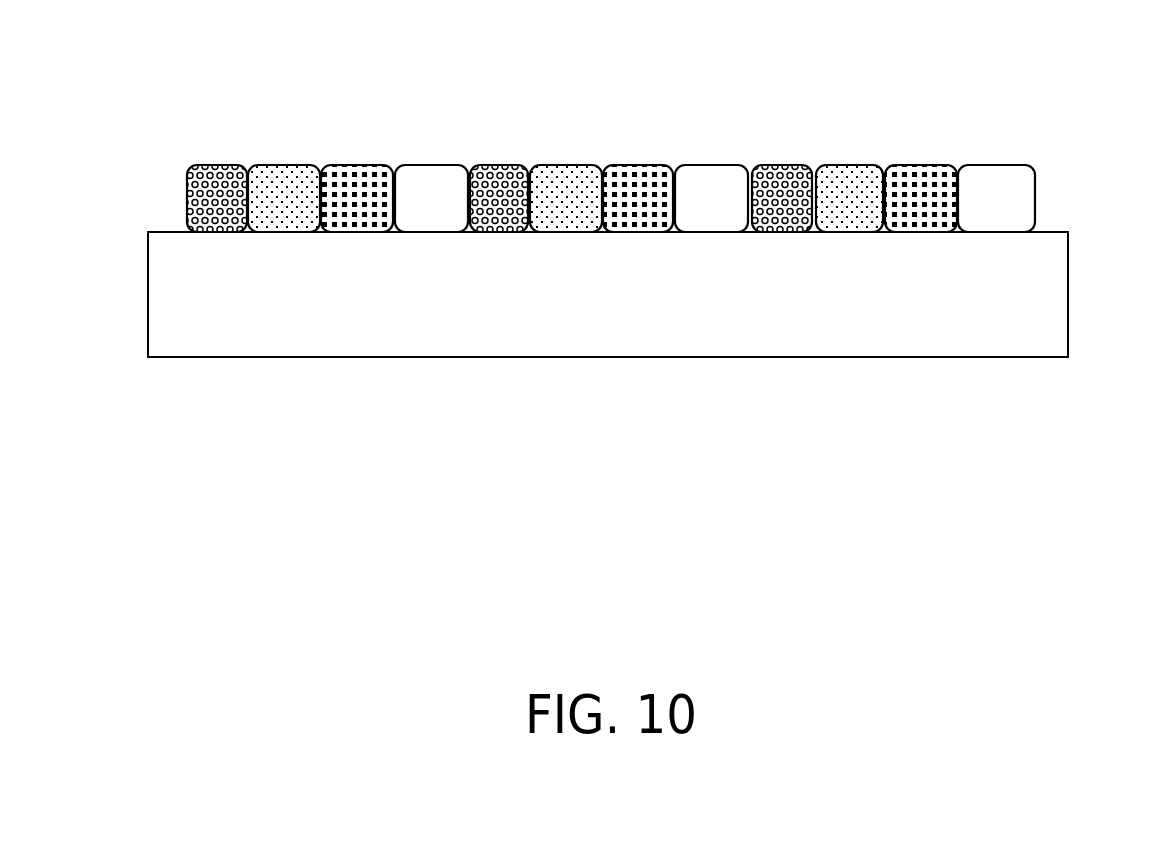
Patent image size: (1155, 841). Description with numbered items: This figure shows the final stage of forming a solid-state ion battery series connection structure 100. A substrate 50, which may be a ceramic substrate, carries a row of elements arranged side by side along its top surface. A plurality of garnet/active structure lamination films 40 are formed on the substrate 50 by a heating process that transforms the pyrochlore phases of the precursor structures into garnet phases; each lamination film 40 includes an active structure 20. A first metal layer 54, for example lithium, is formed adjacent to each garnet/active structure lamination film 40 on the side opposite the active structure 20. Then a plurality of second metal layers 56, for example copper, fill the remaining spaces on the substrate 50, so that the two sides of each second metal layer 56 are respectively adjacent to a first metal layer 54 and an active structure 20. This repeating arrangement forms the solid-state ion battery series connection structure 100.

The solid-state ion battery series connection structure 100 is at (137, 76).
The substrate 50 is at (1055, 294).
The garnet/active structure lamination film 40 is at (743, 267).
The active structure 20 is at (632, 232).
The second metal layer 56 is at (713, 177).
The first metal layer 54 is at (784, 168).